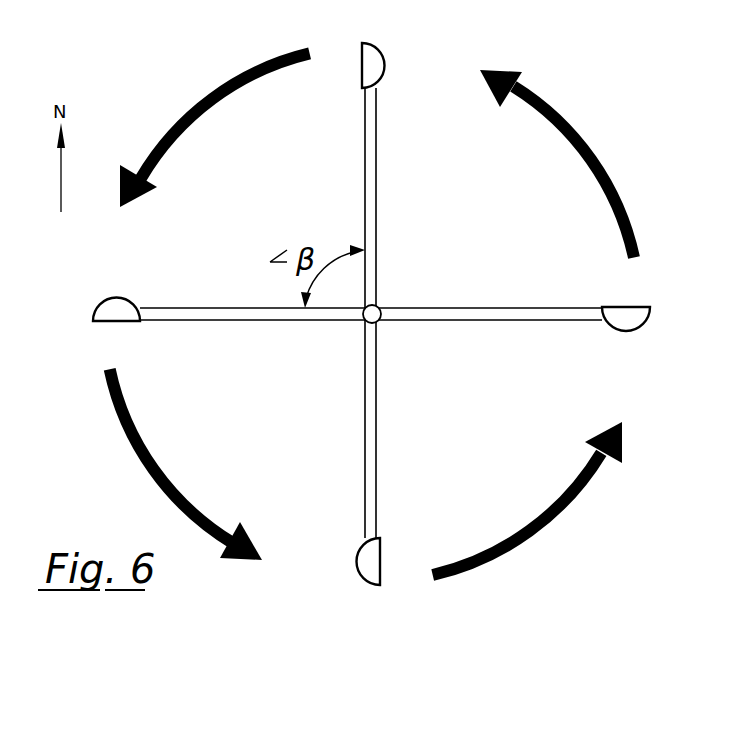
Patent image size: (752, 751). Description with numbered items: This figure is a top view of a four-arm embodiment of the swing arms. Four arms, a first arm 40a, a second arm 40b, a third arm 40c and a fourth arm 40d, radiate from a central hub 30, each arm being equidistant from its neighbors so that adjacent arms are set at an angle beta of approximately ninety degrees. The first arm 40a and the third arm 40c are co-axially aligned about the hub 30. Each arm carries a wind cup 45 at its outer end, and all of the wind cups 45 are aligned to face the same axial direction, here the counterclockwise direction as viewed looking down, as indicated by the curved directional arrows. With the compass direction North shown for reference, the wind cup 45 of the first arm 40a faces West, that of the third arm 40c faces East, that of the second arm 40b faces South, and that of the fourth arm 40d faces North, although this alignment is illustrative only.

The hub 30 is at (379, 322).
The first arm 40a is at (377, 138).
The second arm 40b is at (240, 308).
The third arm 40c is at (377, 491).
The fourth arm 40d is at (503, 307).
The wind cup 45 is at (383, 52).